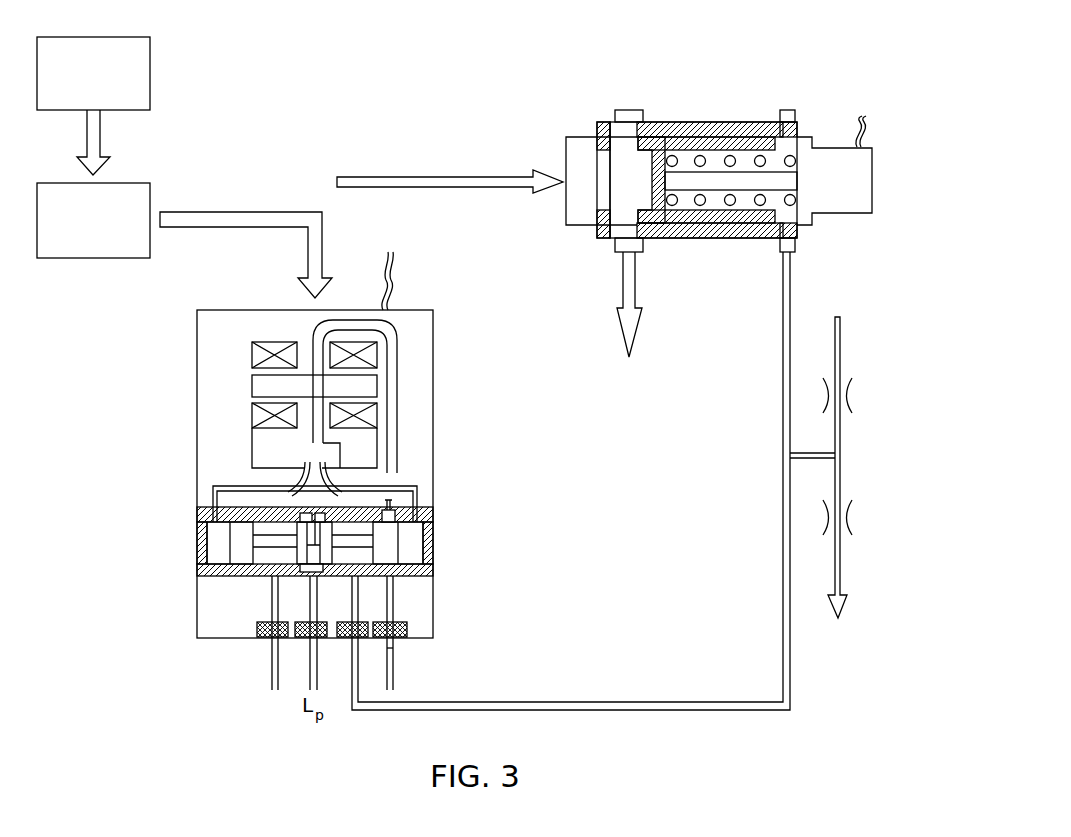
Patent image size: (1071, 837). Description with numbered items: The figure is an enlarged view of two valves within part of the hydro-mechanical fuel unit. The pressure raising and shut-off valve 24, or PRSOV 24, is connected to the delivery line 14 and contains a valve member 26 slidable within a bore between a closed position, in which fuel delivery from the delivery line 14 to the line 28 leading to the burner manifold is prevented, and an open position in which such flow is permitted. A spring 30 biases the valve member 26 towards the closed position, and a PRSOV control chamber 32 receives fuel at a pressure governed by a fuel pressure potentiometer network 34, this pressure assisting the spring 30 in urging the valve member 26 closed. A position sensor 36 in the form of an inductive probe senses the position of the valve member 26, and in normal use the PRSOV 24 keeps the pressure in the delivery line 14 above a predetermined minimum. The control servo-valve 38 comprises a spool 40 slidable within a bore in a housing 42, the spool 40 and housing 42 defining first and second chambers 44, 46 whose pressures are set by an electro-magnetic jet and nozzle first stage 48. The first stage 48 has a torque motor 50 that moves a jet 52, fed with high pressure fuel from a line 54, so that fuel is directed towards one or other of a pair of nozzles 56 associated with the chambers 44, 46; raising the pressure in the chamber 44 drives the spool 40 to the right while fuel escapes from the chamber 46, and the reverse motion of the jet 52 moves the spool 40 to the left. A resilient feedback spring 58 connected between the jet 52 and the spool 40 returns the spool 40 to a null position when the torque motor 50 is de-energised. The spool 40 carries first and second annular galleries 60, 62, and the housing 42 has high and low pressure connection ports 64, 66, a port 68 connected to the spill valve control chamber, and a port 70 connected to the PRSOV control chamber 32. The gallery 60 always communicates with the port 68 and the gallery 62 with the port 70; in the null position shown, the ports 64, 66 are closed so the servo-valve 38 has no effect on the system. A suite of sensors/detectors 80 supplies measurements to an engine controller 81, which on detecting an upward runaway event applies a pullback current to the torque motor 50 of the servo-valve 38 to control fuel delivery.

The delivery line 14 is at (443, 173).
The pressure raising and shut-off valve (PRSOV) 24 is at (690, 134).
The valve member 26 is at (712, 130).
The line 28 is at (623, 292).
The spring 30 is at (728, 142).
The PRSOV control chamber 32 is at (776, 160).
The fuel pressure potentiometer network 34 is at (861, 403).
The position sensor 36 is at (838, 182).
The control servo-valve 38 is at (193, 361).
The spool 40 is at (385, 537).
The housing 42 is at (430, 516).
The first chamber 44 is at (200, 540).
The second chamber 46 is at (410, 552).
The jet and nozzle first stage 48 is at (385, 409).
The torque motor 50 is at (388, 357).
The jet 52 is at (303, 440).
The line 54 is at (397, 648).
The nozzles 56 is at (336, 493).
The feedback spring 58 is at (380, 484).
The first annular gallery 60 is at (215, 540).
The second annular gallery 62 is at (360, 558).
The high pressure connection port 64 is at (400, 583).
The low pressure connection port 66 is at (290, 585).
The port 68 is at (275, 575).
The port 70 is at (393, 606).
The suite of sensors/detectors 80 is at (93, 73).
The engine controller 81 is at (93, 220).